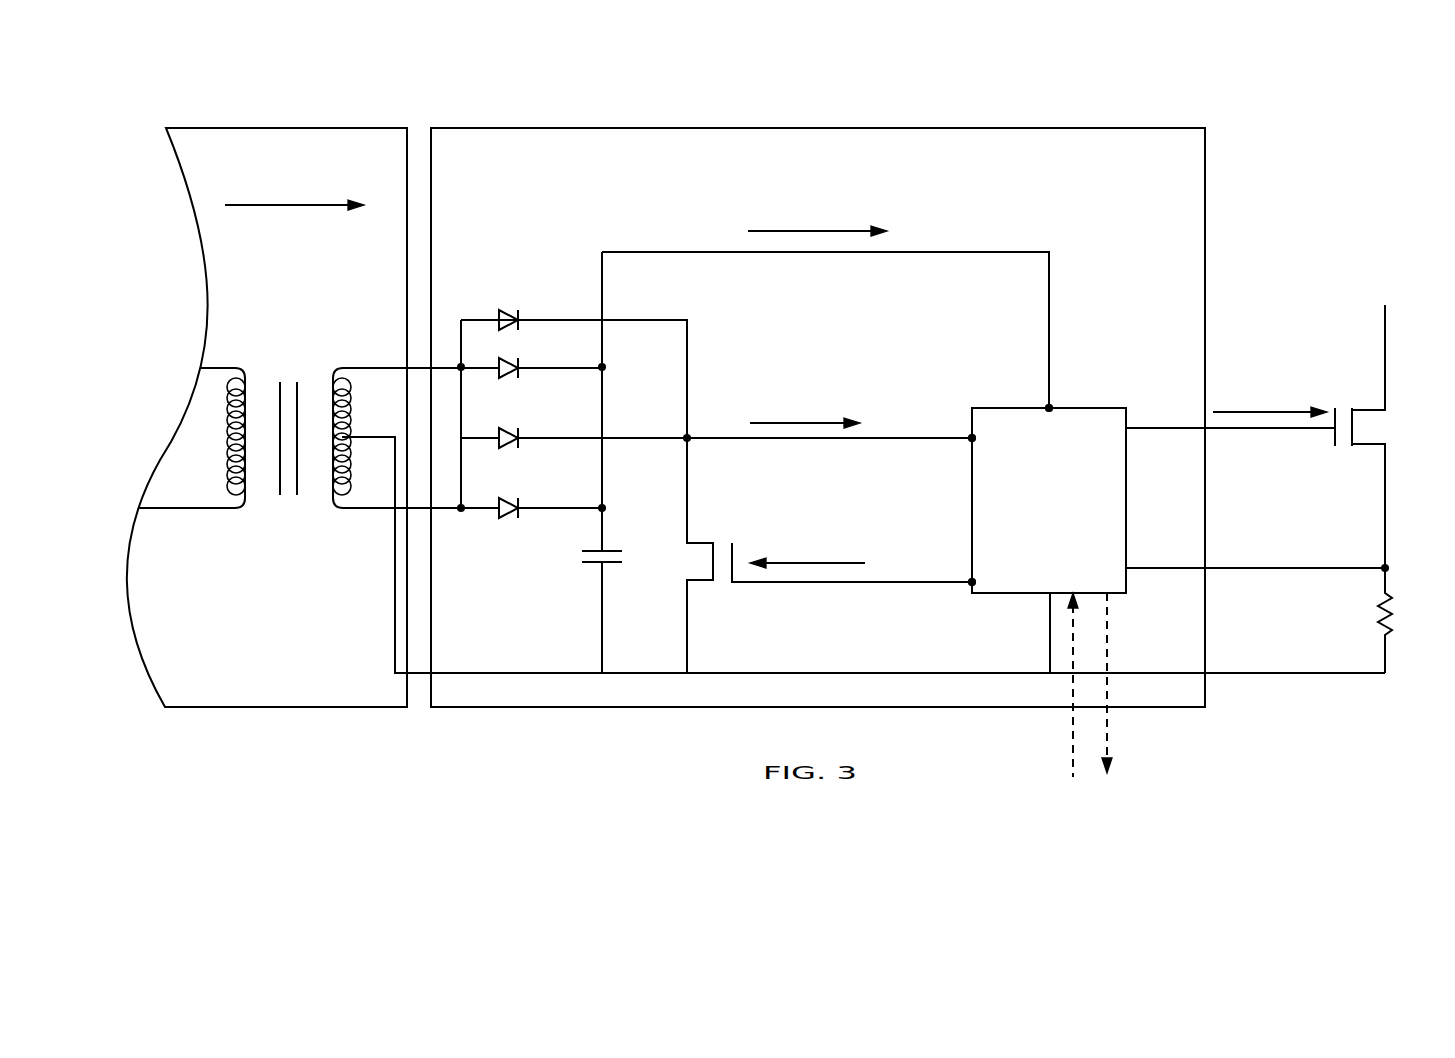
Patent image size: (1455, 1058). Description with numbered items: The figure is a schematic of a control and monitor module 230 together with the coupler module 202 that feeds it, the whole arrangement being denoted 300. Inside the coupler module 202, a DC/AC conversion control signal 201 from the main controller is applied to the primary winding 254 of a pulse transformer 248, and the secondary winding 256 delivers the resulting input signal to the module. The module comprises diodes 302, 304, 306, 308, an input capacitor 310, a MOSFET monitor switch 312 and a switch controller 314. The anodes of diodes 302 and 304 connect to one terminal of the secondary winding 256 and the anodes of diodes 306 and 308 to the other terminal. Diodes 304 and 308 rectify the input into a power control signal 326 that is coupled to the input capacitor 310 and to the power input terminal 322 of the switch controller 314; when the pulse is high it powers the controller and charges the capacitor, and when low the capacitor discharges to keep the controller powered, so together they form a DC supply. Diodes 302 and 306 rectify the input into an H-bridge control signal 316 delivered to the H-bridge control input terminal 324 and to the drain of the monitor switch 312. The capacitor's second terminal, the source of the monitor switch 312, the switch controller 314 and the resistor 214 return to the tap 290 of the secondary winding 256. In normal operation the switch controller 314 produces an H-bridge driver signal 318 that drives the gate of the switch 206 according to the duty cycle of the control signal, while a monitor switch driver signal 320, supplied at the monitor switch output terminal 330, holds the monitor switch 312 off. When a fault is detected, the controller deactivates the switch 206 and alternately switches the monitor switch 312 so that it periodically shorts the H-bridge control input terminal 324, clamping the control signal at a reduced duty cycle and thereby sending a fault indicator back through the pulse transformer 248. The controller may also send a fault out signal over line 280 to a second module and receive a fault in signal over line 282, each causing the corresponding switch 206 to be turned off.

The DC/AC conversion control signal 201 is at (263, 206).
The coupler module 202 is at (332, 126).
The switch 206 is at (1372, 422).
The resistor 214 is at (1378, 628).
The control and monitor module 230 is at (874, 127).
The pulse transformer 248 is at (298, 520).
The primary winding 254 is at (190, 509).
The secondary winding 256 is at (377, 366).
The line 280 is at (1107, 748).
The line 282 is at (1073, 748).
The tap 290 is at (376, 437).
The switch monitoring system 300 is at (1088, 93).
The diode 302 is at (505, 311).
The diode 304 is at (505, 359).
The diode 306 is at (505, 429).
The diode 308 is at (505, 499).
The input capacitor 310 is at (592, 563).
The monitor switch 312 is at (692, 562).
The switch controller 314 is at (1036, 557).
The H-bridge control signal 316 is at (745, 362).
The H-bridge driver signal 318 is at (1264, 325).
The monitor switch driver signal 320 is at (735, 488).
The power input terminal 322 is at (1124, 286).
The H-bridge control input terminal 324 is at (972, 438).
The power control signal 326 is at (817, 217).
The monitor switch output terminal 330 is at (972, 582).